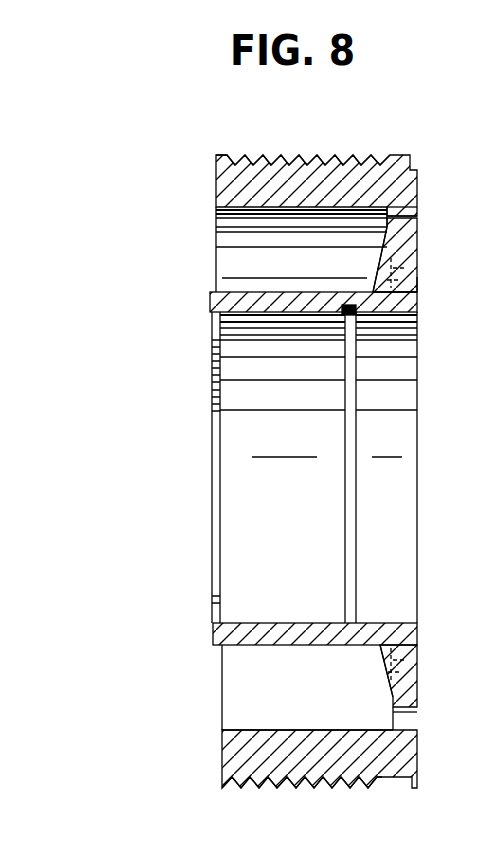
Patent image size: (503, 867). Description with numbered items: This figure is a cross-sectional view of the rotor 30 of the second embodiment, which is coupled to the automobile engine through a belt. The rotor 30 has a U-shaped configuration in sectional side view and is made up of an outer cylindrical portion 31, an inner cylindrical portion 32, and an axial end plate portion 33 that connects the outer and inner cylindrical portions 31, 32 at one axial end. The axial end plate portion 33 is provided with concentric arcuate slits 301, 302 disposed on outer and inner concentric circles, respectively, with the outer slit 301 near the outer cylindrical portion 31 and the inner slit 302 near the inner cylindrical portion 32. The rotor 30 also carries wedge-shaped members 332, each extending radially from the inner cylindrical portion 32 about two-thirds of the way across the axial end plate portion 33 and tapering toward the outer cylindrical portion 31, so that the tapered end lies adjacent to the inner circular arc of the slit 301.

The rotor 30 is at (399, 155).
The outer cylindrical portion 31 is at (333, 172).
The arcuate slit 301 is at (415, 217).
The axial end plate portion 33 is at (403, 241).
The wedge-shaped member 332 is at (389, 267).
The arcuate slit 302 is at (417, 278).
The inner cylindrical portion 32 is at (313, 315).